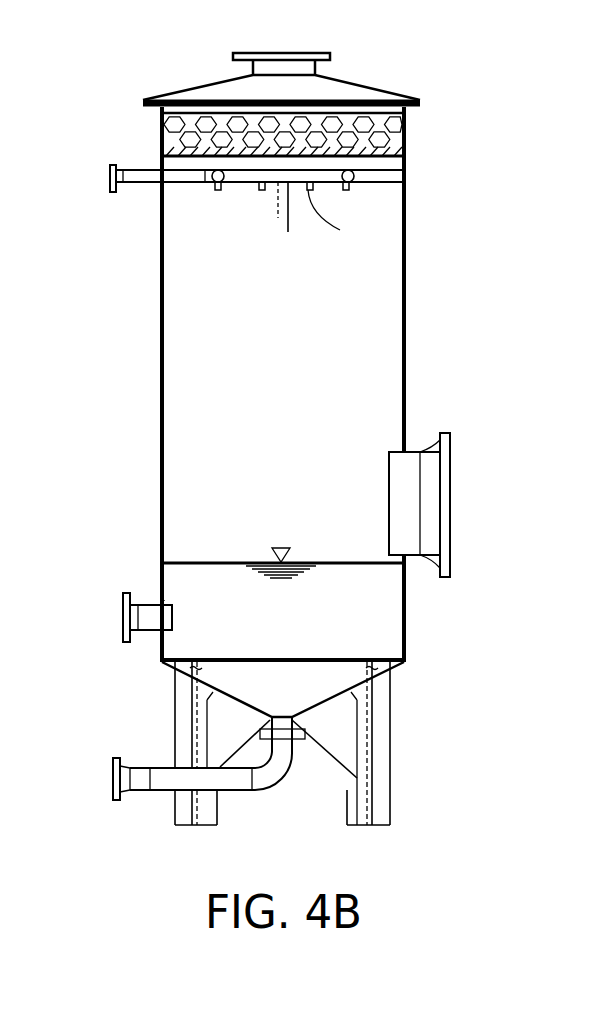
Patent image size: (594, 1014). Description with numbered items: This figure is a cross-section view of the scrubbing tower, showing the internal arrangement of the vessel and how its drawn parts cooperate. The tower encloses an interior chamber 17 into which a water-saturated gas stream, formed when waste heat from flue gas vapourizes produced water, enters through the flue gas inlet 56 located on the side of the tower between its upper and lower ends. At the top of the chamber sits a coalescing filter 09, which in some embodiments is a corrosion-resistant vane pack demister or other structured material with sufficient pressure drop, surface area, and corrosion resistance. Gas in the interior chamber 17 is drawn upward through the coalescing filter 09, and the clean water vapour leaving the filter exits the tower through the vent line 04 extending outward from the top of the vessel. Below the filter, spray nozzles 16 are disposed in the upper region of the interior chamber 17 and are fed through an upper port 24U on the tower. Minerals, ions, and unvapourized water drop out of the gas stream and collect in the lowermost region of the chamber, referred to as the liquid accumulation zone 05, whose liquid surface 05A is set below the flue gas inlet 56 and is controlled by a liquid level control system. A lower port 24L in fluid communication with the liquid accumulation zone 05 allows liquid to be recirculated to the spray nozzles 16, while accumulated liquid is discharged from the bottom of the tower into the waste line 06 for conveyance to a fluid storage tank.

The vent line 04 is at (298, 55).
The coalescing filter 09 is at (395, 132).
The upper port 24U is at (114, 162).
The spray nozzles 16 is at (352, 186).
The interior chamber 17 is at (337, 353).
The flue gas inlet 56 is at (452, 493).
The liquid surface 05A is at (228, 562).
The liquid accumulation zone 05 is at (310, 620).
The lower port 24L is at (122, 645).
The waste line 06 is at (113, 775).